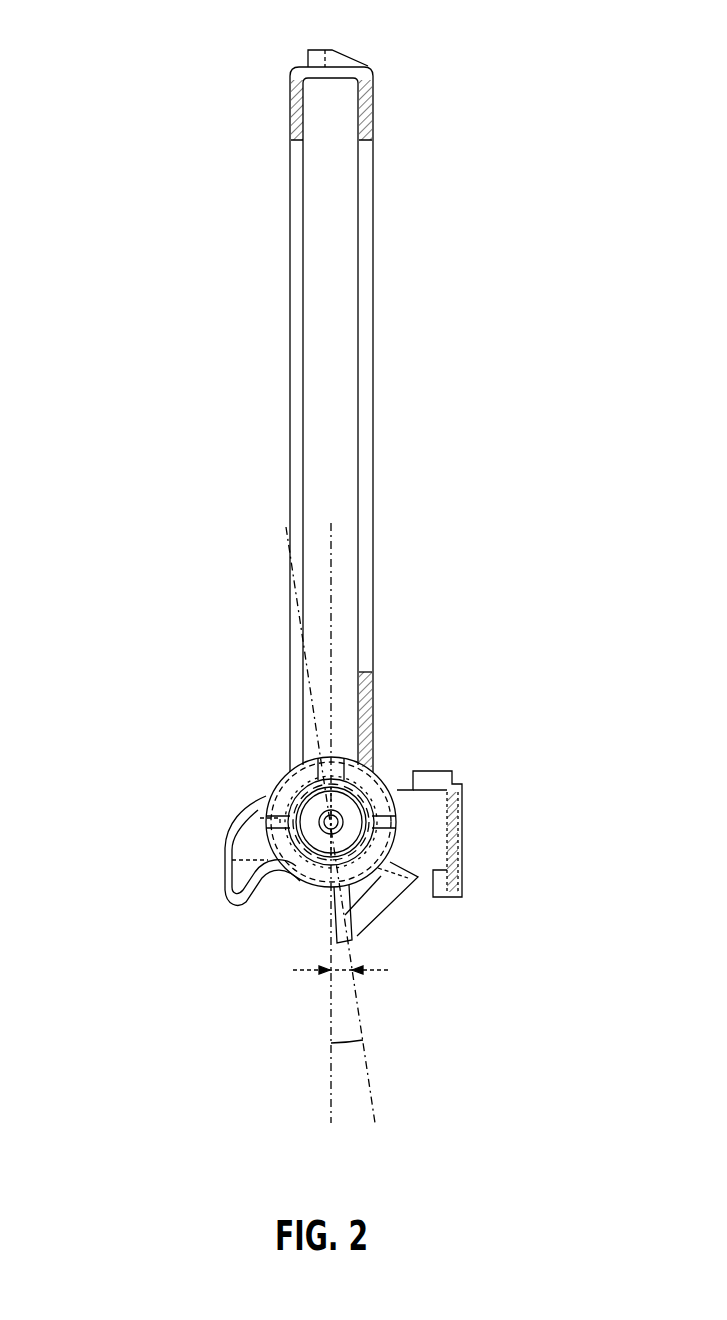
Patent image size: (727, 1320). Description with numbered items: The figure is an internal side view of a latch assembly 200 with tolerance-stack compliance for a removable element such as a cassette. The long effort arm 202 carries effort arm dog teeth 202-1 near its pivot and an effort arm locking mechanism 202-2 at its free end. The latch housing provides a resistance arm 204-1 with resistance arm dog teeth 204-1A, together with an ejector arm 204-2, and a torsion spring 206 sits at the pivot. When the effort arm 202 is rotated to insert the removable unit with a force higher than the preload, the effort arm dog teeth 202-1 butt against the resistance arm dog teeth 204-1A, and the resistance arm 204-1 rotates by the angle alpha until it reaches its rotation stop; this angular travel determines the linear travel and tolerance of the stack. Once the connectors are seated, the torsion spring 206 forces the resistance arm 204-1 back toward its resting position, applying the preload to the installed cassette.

The latch assembly 200 is at (188, 152).
The effort arm 202 is at (338, 292).
The effort arm dog teeth 202-1 is at (375, 781).
The effort arm locking mechanism 202-2 is at (342, 60).
The resistance arm 204-1 is at (385, 912).
The resistance arm dog teeth 204-1A is at (290, 787).
The ejector arm 204-2 is at (248, 857).
The torsion spring 206 is at (291, 810).